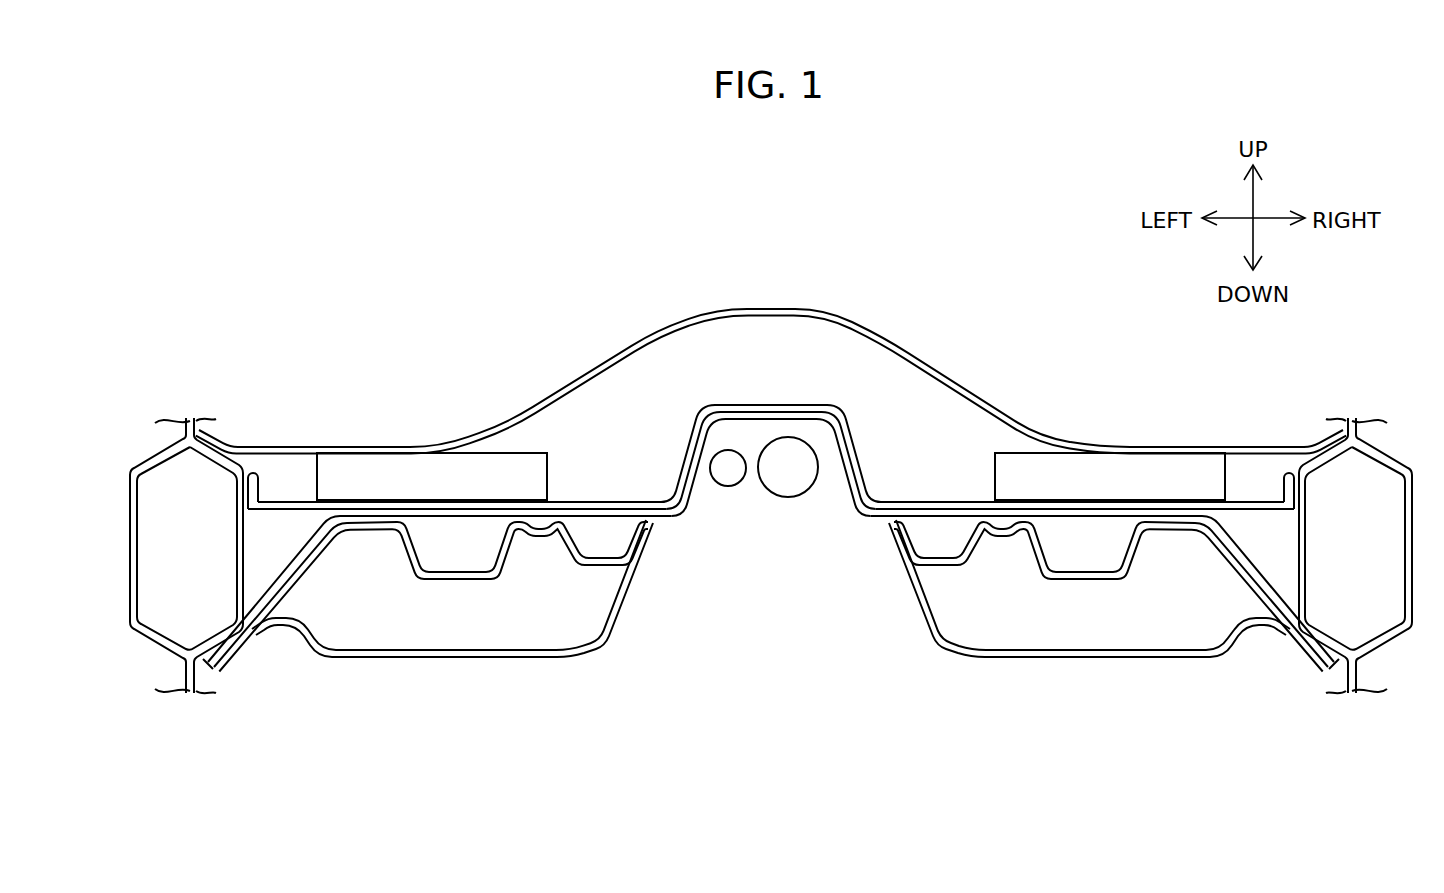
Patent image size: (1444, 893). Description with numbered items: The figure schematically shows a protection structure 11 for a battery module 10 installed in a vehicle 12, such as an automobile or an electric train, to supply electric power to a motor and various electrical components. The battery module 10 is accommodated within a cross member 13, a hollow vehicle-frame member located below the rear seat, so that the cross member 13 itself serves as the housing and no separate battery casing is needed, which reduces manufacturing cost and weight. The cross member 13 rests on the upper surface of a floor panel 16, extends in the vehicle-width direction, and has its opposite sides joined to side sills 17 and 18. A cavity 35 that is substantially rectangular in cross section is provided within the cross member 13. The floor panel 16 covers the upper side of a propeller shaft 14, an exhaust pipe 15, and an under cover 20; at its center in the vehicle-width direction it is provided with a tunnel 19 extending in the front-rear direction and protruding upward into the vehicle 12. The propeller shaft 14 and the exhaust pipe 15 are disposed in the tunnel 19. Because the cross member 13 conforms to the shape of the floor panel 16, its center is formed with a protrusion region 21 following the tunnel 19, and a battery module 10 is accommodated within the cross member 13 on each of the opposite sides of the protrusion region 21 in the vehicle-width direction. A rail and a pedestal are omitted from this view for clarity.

The battery module 10 is at (402, 477).
The protection structure 11 is at (771, 325).
The vehicle 12 is at (771, 411).
The cross member 13 is at (595, 370).
The propeller shaft 14 is at (790, 482).
The exhaust pipe 15 is at (727, 477).
The floor panel 16 is at (683, 497).
The side sill 17 is at (132, 467).
The side sill 18 is at (1402, 457).
The tunnel 19 is at (840, 470).
The under cover 20 is at (437, 657).
The protrusion region 21 is at (771, 449).
The cavity 35 is at (978, 417).